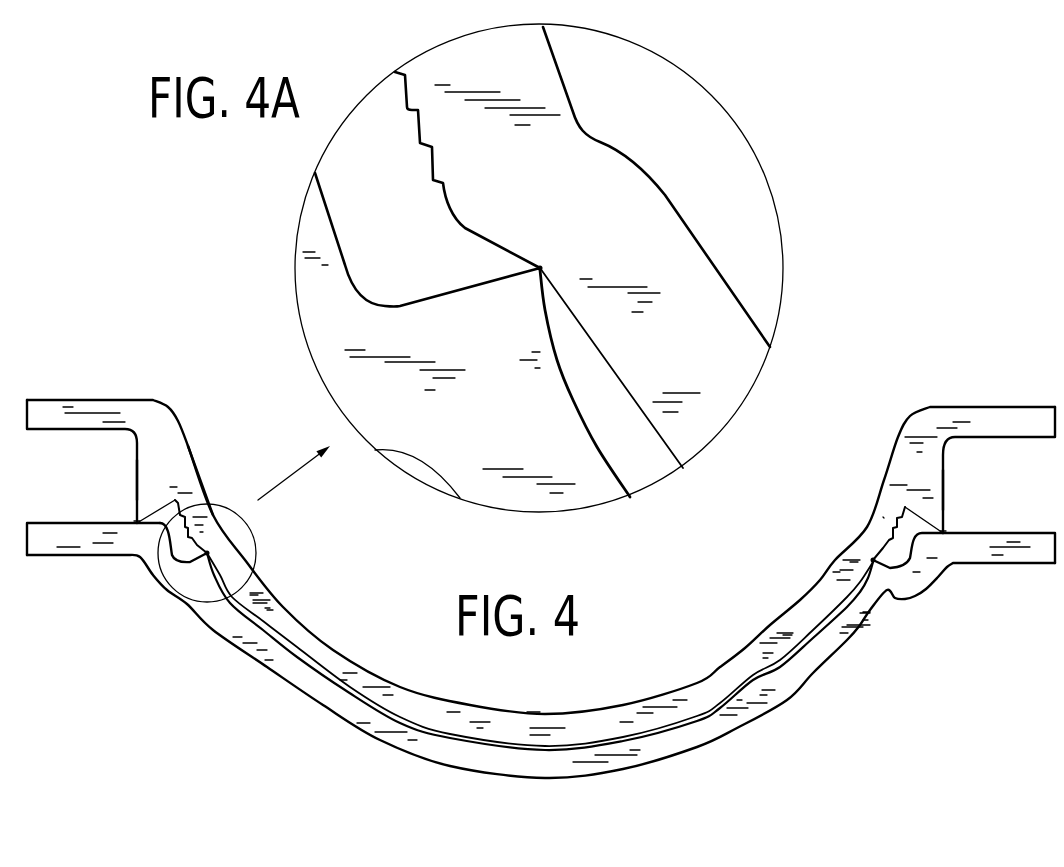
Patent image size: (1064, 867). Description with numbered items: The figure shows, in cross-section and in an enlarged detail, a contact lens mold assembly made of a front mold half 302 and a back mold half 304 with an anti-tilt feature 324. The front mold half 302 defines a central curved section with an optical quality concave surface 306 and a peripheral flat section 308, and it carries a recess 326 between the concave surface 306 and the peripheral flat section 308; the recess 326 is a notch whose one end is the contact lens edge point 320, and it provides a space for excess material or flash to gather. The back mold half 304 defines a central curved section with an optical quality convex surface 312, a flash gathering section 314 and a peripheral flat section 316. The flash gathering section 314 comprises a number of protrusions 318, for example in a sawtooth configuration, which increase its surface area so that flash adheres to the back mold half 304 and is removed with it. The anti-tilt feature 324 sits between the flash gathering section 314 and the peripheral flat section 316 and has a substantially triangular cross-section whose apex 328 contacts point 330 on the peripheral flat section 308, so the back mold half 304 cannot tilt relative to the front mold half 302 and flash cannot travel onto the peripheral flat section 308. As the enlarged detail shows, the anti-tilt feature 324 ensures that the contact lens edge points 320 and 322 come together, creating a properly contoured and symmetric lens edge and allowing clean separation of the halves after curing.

In FIG. 4, the front mold half 302 is at (323, 703).
In FIG. 4, the back mold half 304 is at (335, 655).
In FIG. 4A, the back mold half 304 is at (670, 233).
In FIG. 4, the concave surface 306 is at (505, 747).
In FIG. 4A, the concave surface 306 is at (525, 497).
In FIG. 4, the peripheral flat section 308 is at (43, 523).
In FIG. 4, the convex surface 312 is at (523, 740).
In FIG. 4, the flash gathering section 314 is at (883, 517).
In FIG. 4, the peripheral flat section 316 is at (42, 430).
In FIG. 4, the protrusions 318 is at (890, 545).
In FIG. 4A, the protrusions 318 is at (417, 147).
In FIG. 4, the contact lens edge point 320 is at (185, 591).
In FIG. 4A, the contact lens edge point 320 is at (530, 280).
In FIG. 4, the contact lens edge point 322 is at (222, 513).
In FIG. 4A, the contact lens edge point 322 is at (540, 267).
In FIG. 4, the anti-tilt feature 324 is at (138, 495).
In FIG. 4, the recess 326 is at (893, 597).
In FIG. 4A, the recess 326 is at (377, 302).
In FIG. 4, the apex 328 is at (137, 523).
In FIG. 4, the point 330 is at (137, 523).